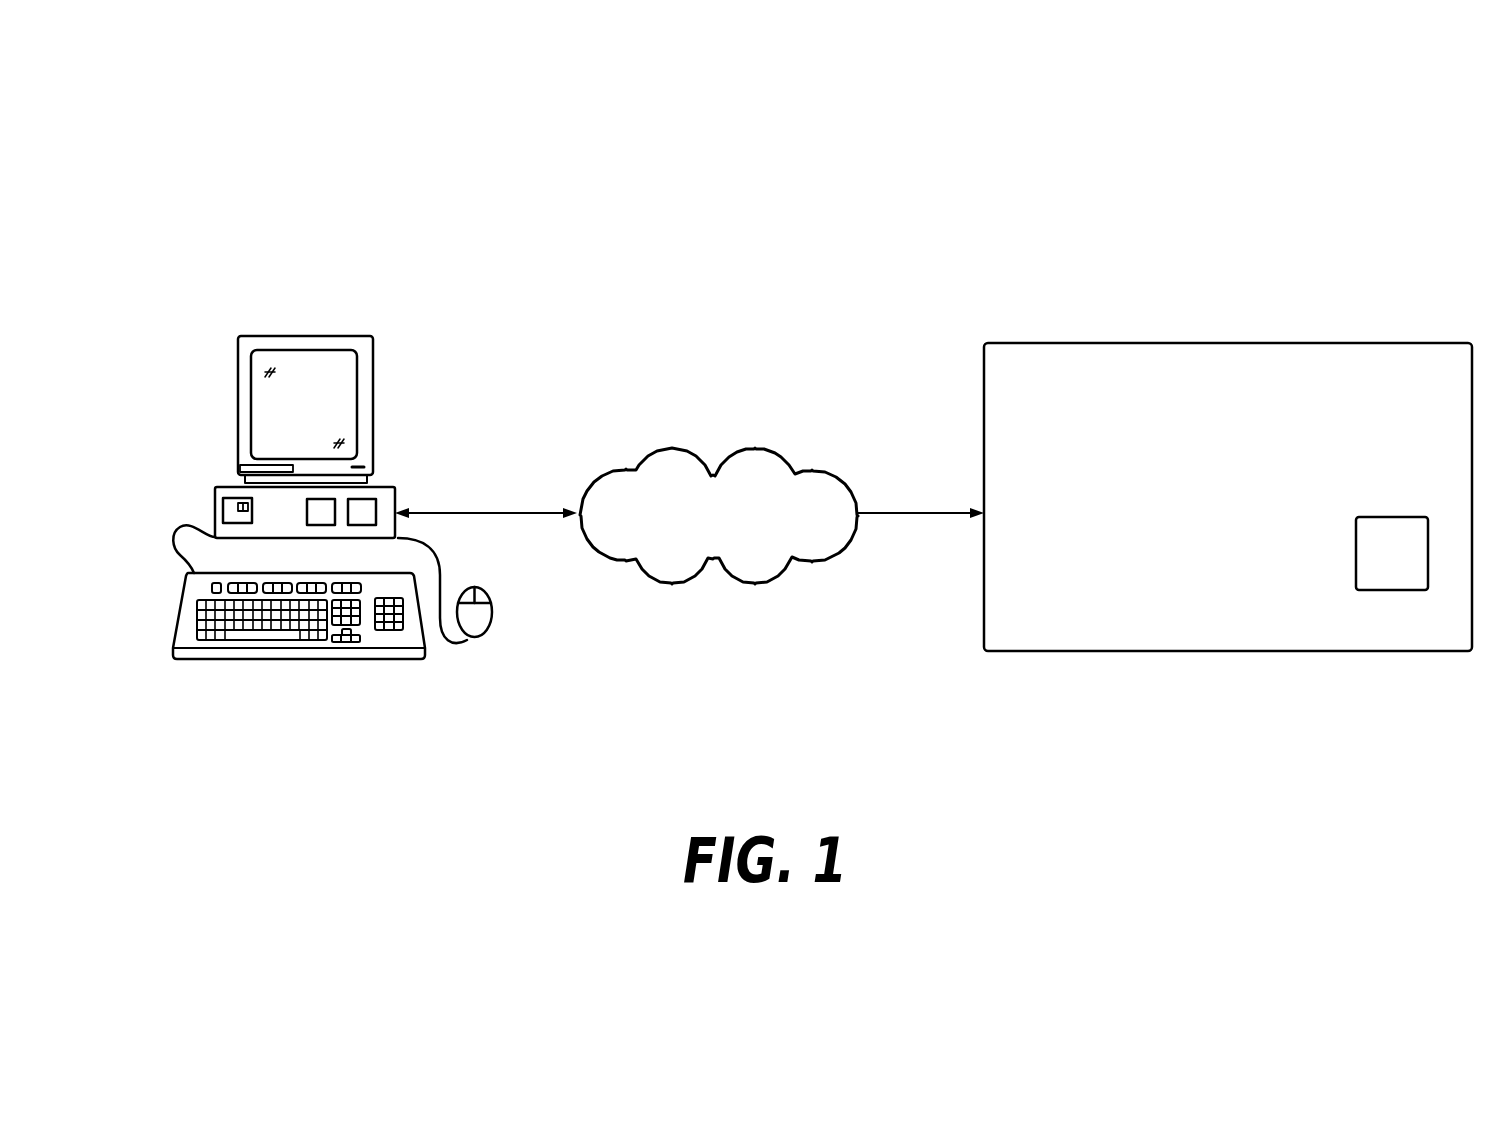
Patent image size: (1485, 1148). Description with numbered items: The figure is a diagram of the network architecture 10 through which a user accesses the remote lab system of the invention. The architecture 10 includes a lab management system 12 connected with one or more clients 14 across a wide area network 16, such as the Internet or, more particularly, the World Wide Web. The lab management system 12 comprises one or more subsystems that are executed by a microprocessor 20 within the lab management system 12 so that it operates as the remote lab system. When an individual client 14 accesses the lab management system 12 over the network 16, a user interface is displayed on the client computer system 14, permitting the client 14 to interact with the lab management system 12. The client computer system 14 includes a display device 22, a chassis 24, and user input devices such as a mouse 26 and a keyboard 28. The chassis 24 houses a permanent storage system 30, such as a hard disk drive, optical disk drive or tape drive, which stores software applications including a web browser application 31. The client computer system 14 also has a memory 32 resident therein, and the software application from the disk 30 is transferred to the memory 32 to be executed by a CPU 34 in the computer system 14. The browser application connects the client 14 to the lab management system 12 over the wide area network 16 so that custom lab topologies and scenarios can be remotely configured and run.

The architecture 10 is at (309, 186).
The lab management system 12 is at (1262, 343).
The client computer system 14 is at (212, 310).
The wide area network 16 is at (748, 450).
The microprocessor 20 is at (1398, 575).
The display device 22 is at (373, 364).
The chassis 24 is at (215, 508).
The mouse 26 is at (492, 617).
The keyboard 28 is at (293, 660).
The permanent storage system 30 is at (226, 501).
The web browser application 31 is at (241, 506).
The memory 32 is at (358, 525).
The CPU 34 is at (315, 525).